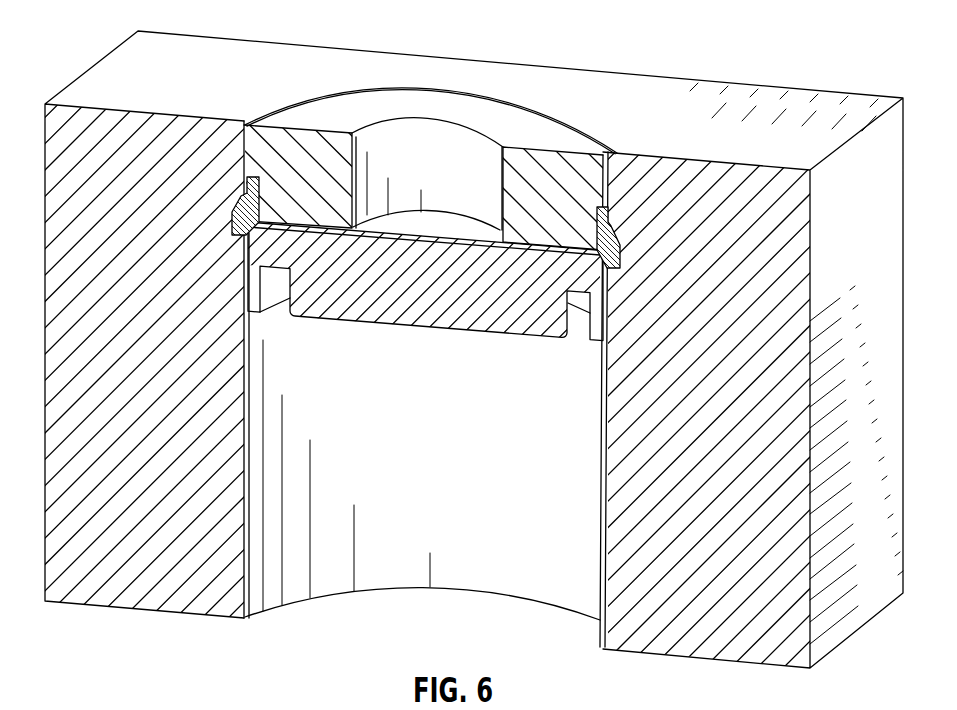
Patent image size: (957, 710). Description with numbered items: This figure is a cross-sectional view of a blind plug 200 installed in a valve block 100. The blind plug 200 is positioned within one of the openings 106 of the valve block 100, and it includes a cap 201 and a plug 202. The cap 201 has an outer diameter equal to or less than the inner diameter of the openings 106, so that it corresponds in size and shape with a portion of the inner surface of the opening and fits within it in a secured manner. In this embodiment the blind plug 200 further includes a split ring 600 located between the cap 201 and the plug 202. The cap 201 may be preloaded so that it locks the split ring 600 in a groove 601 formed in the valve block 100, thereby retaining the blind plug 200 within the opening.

The blind plug 200 is at (97, 35).
The valve block 100 is at (633, 512).
The openings 106 is at (250, 350).
The cap 201 is at (612, 158).
The plug 202 is at (417, 312).
The split ring 600 is at (620, 250).
The groove 601 is at (233, 230).